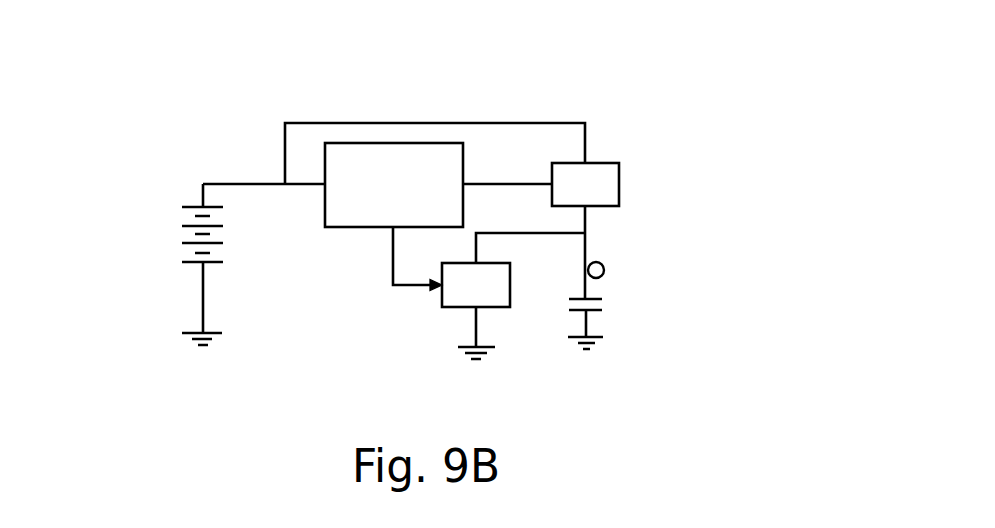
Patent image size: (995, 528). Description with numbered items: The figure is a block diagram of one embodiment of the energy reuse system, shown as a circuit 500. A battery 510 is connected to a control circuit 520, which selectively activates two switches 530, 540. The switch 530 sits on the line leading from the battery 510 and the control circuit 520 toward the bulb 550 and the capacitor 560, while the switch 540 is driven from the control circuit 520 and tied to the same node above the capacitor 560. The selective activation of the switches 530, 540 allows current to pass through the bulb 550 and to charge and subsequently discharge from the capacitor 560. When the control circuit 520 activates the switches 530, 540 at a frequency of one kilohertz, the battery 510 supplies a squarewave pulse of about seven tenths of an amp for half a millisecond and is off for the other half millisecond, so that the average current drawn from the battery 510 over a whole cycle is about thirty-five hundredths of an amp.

The circuit 500 is at (571, 110).
The battery 510 is at (193, 205).
The control circuit 520 is at (325, 210).
The switch 530 is at (620, 190).
The switch 540 is at (440, 298).
The bulb 550 is at (600, 261).
The capacitor 560 is at (575, 313).